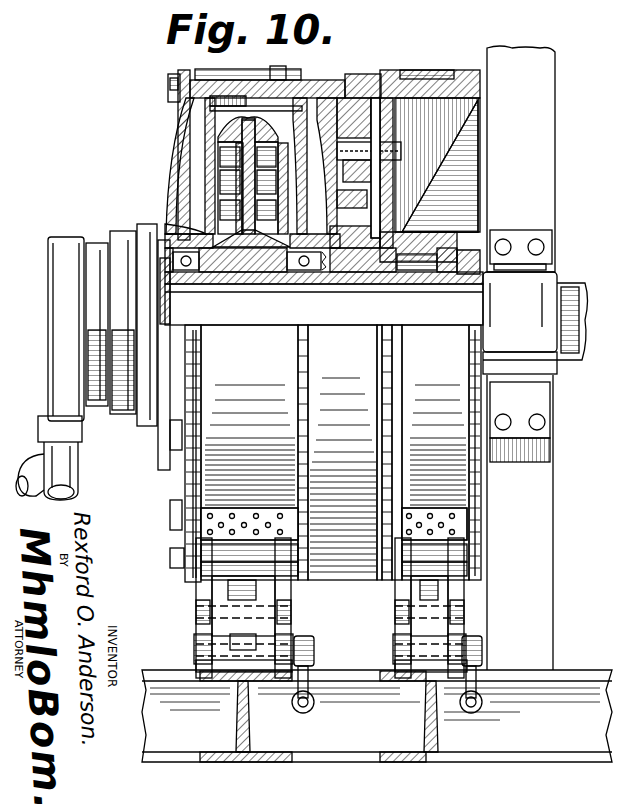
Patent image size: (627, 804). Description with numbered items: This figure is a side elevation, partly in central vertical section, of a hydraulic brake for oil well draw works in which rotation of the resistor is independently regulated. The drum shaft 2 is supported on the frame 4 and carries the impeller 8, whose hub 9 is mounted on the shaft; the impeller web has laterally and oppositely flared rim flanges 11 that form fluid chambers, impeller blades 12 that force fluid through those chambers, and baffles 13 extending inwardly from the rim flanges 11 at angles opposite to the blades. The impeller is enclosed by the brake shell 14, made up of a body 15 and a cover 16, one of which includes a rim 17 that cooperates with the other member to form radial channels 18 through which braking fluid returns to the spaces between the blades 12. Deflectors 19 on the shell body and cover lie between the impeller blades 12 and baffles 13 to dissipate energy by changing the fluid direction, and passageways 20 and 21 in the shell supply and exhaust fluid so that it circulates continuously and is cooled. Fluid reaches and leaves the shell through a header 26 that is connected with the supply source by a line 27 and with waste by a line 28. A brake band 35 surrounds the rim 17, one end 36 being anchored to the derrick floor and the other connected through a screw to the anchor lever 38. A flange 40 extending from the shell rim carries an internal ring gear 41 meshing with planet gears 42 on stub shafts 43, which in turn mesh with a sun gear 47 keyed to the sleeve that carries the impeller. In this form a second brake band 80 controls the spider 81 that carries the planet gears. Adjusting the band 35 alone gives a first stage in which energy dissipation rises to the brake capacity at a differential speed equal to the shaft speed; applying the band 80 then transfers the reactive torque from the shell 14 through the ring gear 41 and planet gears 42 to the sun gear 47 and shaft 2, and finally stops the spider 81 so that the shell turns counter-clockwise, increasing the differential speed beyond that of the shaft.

The shaft 2 is at (582, 286).
The frame 4 is at (562, 678).
The impeller 8 is at (184, 72).
The hub 9 is at (180, 222).
The rim flanges 11 is at (205, 104).
The impeller blades 12 is at (220, 208).
The baffles 13 is at (178, 132).
The brake shell 14 is at (192, 578).
The body 15 is at (300, 69).
The cover 16 is at (168, 80).
The rim 17 is at (222, 80).
The radial channels 18 is at (236, 160).
The deflectors 19 is at (236, 186).
The passageway 20 is at (280, 59).
The passageway 21 is at (205, 148).
The header 26 is at (116, 234).
The line 27 is at (74, 476).
The line 28 is at (36, 456).
The brake band 35 is at (212, 484).
The end 36 is at (198, 570).
The anchor lever 38 is at (228, 586).
The flange 40 is at (383, 74).
The internal ring gear 41 is at (352, 76).
The planet gears 42 is at (396, 196).
The stub shafts 43 is at (430, 150).
The sun gear 47 is at (376, 222).
The brake band 80 is at (440, 70).
The spider 81 is at (400, 236).